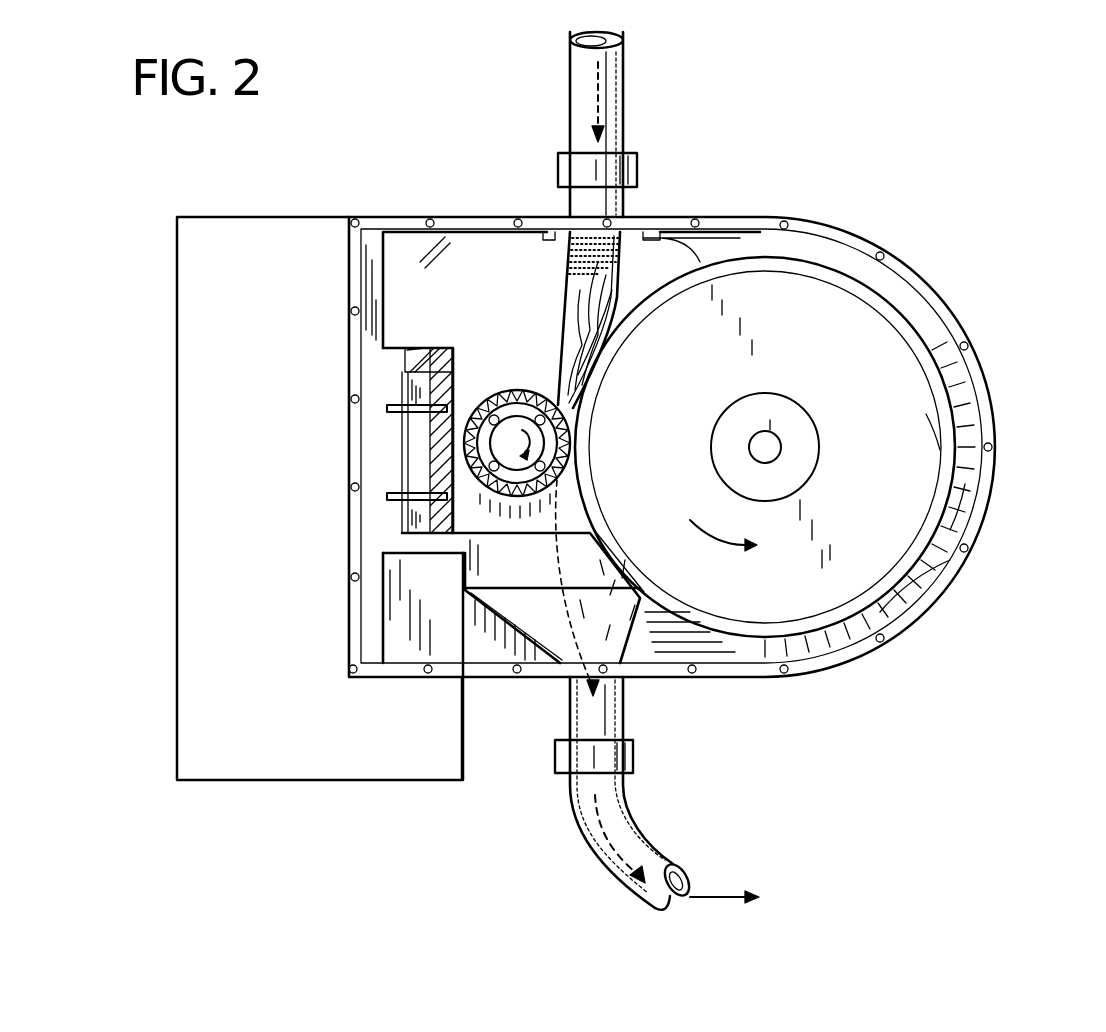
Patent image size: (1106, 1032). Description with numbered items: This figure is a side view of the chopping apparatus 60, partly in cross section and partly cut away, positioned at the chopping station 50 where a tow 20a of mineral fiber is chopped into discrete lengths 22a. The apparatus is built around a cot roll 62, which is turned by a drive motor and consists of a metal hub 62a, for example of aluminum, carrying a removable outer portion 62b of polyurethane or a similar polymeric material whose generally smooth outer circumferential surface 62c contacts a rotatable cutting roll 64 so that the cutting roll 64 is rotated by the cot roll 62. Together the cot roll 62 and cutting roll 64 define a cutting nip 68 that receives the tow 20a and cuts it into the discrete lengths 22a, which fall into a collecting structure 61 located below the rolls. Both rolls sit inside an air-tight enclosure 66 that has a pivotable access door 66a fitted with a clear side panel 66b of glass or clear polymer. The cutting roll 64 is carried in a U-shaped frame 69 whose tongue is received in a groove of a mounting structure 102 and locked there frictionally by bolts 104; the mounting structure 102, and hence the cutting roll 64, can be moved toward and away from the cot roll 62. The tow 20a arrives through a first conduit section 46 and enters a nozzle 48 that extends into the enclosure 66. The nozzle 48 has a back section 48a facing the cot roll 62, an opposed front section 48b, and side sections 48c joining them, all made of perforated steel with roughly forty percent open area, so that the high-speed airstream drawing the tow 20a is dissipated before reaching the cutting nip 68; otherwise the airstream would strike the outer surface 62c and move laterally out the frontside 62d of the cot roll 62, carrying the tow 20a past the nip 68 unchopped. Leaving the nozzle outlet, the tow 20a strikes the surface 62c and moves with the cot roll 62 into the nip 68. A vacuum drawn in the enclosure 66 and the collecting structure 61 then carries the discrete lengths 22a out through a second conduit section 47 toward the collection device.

The tow 20a is at (675, 235).
The discrete lengths 22a is at (600, 643).
The first conduit section 46 is at (612, 92).
The second conduit section 47 is at (625, 830).
The nozzle 48 is at (562, 337).
The back section 48a is at (621, 282).
The front section 48b is at (566, 293).
The side sections 48c is at (577, 247).
The chopping station 50 is at (914, 257).
The chopping apparatus 60 is at (983, 249).
The collecting structure 61 is at (618, 627).
The cot roll 62 is at (878, 332).
The metal hub 62a is at (748, 280).
The removable outer portion 62b is at (813, 268).
The outer circumferential surface 62c is at (965, 484).
The frontside 62d is at (926, 414).
The cutting roll 64 is at (585, 444).
The air-tight enclosure 66 is at (948, 574).
The pivotable access door 66a is at (905, 621).
The clear side panel 66b is at (403, 253).
The cutting nip 68 is at (576, 416).
The U-shaped frame 69 is at (433, 350).
The mounting structure 102 is at (418, 387).
The bolts 104 is at (398, 411).